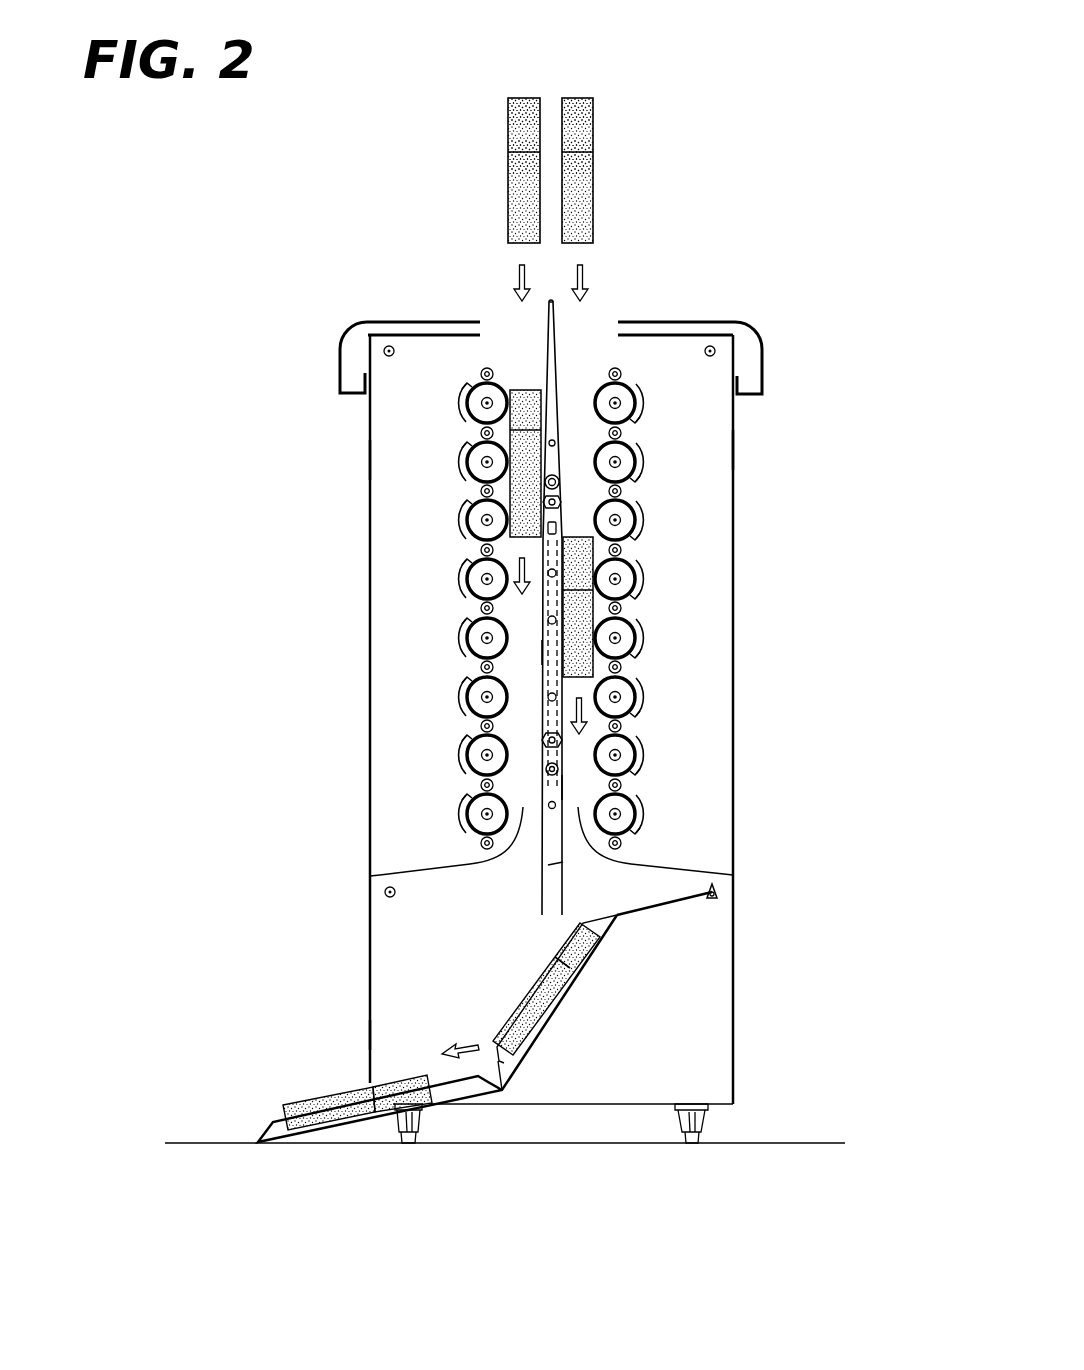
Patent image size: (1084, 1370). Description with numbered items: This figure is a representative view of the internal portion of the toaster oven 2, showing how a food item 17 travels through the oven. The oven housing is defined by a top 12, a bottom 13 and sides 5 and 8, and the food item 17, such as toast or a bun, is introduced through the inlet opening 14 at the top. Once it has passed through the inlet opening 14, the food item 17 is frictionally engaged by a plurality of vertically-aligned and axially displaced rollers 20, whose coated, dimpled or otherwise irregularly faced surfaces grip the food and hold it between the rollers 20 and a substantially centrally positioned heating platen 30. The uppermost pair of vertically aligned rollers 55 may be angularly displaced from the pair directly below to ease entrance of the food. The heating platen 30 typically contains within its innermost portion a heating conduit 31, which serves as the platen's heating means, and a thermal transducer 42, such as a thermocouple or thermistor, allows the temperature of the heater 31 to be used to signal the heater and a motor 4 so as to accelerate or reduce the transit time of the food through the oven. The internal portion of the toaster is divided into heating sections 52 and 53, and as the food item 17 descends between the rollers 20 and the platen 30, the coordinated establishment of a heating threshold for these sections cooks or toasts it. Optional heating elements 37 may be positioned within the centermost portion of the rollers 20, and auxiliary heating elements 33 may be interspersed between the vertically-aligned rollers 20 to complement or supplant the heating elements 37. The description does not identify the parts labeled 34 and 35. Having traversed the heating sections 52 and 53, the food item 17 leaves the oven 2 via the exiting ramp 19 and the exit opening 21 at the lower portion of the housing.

The toaster oven 2 is at (805, 308).
The motor 4 is at (370, 463).
The side 5 is at (688, 1003).
The side 8 is at (737, 450).
The top 12 is at (712, 318).
The bottom 13 is at (563, 1105).
The inlet opening 14 is at (508, 320).
The food item 17 is at (528, 97).
The exiting ramp 19 is at (493, 1045).
The rollers 20 is at (482, 460).
The exit opening 21 is at (370, 1035).
The heating platen 30 is at (560, 864).
The heating conduit 31 is at (548, 696).
The auxiliary heating elements 33 is at (613, 723).
The bar lower section 34 is at (563, 787).
The bar side edge 35 is at (537, 653).
The heating elements 37 is at (482, 463).
The thermal transducer 42 is at (547, 736).
The heating section 52 is at (567, 480).
The heating section 53 is at (522, 545).
The uppermost pair of rollers 55 is at (484, 396).